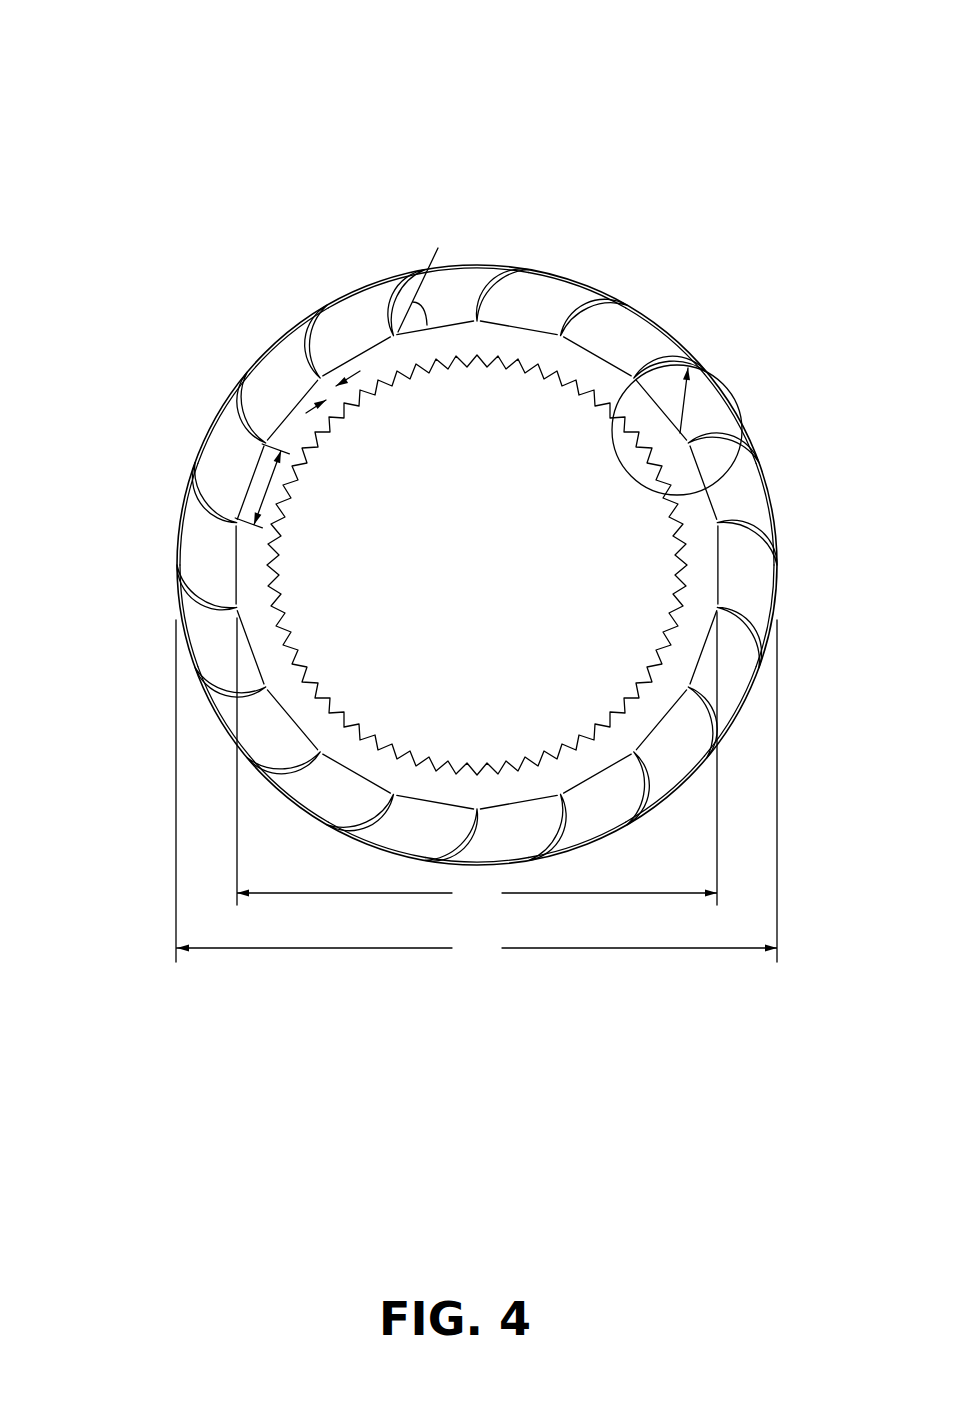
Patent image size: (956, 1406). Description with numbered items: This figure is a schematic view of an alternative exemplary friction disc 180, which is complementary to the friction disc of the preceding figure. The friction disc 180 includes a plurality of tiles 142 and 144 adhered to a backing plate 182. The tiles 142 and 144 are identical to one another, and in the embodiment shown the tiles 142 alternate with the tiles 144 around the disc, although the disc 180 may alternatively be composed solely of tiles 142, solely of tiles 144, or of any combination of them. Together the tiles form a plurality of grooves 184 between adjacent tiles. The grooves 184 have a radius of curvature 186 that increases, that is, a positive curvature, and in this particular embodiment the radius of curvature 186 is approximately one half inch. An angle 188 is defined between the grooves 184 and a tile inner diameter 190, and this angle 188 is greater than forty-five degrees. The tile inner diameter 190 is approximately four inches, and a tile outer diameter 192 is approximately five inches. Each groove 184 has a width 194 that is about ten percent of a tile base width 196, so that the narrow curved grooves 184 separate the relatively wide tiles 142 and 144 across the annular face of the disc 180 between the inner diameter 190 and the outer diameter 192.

The friction disc 180 is at (232, 116).
The backing plate 182 is at (455, 338).
The grooves 184 is at (425, 514).
The radius of curvature 186 is at (653, 365).
The angle 188 is at (425, 322).
The tiles 142 is at (287, 360).
The tiles 144 is at (233, 443).
The tile inner diameter 190 is at (477, 759).
The tile outer diameter 192 is at (476, 791).
The width 194 is at (316, 378).
The tile base width 196 is at (272, 493).